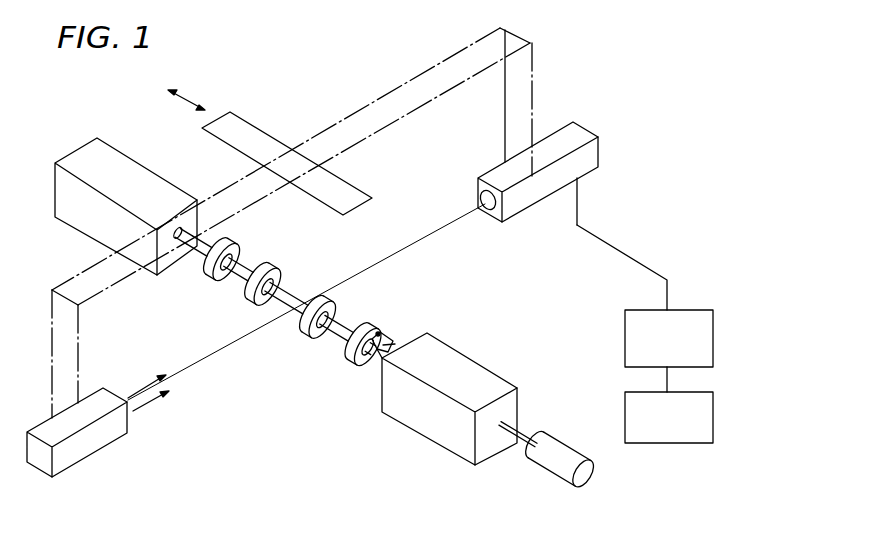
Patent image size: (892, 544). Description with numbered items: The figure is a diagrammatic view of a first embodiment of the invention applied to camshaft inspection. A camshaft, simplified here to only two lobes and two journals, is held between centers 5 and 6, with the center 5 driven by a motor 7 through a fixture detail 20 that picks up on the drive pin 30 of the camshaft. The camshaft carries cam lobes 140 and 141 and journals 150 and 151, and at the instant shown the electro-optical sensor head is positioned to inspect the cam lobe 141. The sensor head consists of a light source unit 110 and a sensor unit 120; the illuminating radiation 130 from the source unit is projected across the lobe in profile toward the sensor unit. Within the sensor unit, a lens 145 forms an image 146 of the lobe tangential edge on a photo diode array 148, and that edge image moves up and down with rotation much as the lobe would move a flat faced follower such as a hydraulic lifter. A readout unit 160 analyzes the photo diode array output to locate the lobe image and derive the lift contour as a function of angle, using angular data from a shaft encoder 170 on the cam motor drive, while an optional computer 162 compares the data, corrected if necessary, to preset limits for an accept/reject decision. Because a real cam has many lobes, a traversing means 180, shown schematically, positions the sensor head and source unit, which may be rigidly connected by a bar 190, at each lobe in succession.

The center 5 is at (383, 361).
The center 6 is at (179, 230).
The motor 7 is at (480, 372).
The fixture detail 20 is at (390, 346).
The drive pin 30 is at (379, 335).
The light source unit 110 is at (94, 463).
The sensor unit 120 is at (495, 173).
The illuminating radiation 130 is at (146, 387).
The cam lobe 140 is at (280, 276).
The cam lobe 141 is at (325, 298).
The lens 145 is at (487, 218).
The image 146 is at (602, 136).
The photo diode array 148 is at (586, 156).
The journal 150 is at (238, 248).
The journal 151 is at (352, 357).
The readout unit 160 is at (691, 348).
The computer 162 is at (688, 428).
The shaft encoder 170 is at (560, 452).
The traversing means 180 is at (257, 135).
The bar 190 is at (453, 58).